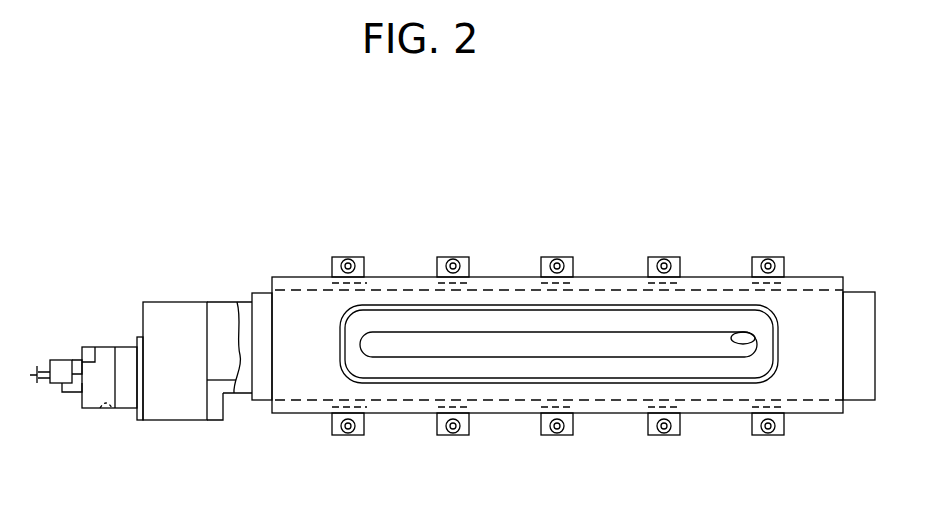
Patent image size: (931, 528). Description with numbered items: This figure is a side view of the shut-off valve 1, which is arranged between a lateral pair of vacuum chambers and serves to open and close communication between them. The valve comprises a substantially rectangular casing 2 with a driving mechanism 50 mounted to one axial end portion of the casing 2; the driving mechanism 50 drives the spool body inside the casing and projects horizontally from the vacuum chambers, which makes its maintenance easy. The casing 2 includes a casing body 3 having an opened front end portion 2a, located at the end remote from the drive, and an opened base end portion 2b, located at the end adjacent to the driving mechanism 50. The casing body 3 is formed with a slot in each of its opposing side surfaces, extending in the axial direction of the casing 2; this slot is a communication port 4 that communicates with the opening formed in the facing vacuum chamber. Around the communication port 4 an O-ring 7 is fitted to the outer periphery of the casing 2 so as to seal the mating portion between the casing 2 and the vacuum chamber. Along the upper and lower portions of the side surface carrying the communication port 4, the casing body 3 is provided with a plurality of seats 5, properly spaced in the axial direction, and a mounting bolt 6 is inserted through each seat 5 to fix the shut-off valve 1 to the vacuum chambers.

The shut-off valve 1 is at (445, 154).
The casing 2 is at (500, 277).
The opened front end portion 2a is at (851, 283).
The opened base end portion 2b is at (263, 277).
The casing body 3 is at (289, 392).
The communication port 4 is at (750, 338).
The seat 5 is at (364, 262).
The mounting bolt 6 is at (348, 259).
The O-ring 7 is at (340, 348).
The driving mechanism 50 is at (152, 290).